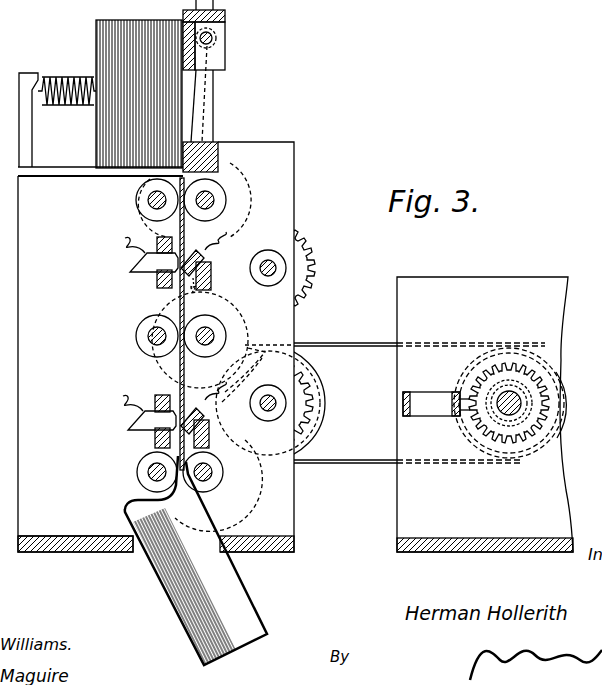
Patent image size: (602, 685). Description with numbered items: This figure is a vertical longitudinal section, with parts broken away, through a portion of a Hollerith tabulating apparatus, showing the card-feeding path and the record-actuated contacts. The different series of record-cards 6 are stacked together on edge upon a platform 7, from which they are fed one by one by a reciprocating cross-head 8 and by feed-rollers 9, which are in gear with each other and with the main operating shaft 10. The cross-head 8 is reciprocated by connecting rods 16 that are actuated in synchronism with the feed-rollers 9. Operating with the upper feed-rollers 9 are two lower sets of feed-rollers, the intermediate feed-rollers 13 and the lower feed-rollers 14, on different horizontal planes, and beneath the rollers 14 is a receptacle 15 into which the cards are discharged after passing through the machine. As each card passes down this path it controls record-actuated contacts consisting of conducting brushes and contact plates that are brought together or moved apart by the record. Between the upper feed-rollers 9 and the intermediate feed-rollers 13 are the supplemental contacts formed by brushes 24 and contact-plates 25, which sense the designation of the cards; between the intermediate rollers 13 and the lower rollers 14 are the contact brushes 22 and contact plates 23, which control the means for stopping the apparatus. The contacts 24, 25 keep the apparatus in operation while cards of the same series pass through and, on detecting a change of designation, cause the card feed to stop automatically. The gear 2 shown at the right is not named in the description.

The driving gear 2 is at (528, 432).
The record-cards 6 is at (139, 84).
The platform 7 is at (68, 176).
The reciprocating cross-head 8 is at (214, 35).
The feed-rollers 9 is at (139, 205).
The main operating shaft 10 is at (262, 416).
The intermediate feed-rollers 13 is at (136, 338).
The lower feed-rollers 14 is at (147, 476).
The receptacle 15 is at (196, 560).
The connecting rods 16 is at (207, 92).
The contact brushes 22 is at (249, 373).
The contact plates 23 is at (130, 432).
The brushes 24 is at (193, 290).
The contact-plates 25 is at (135, 275).